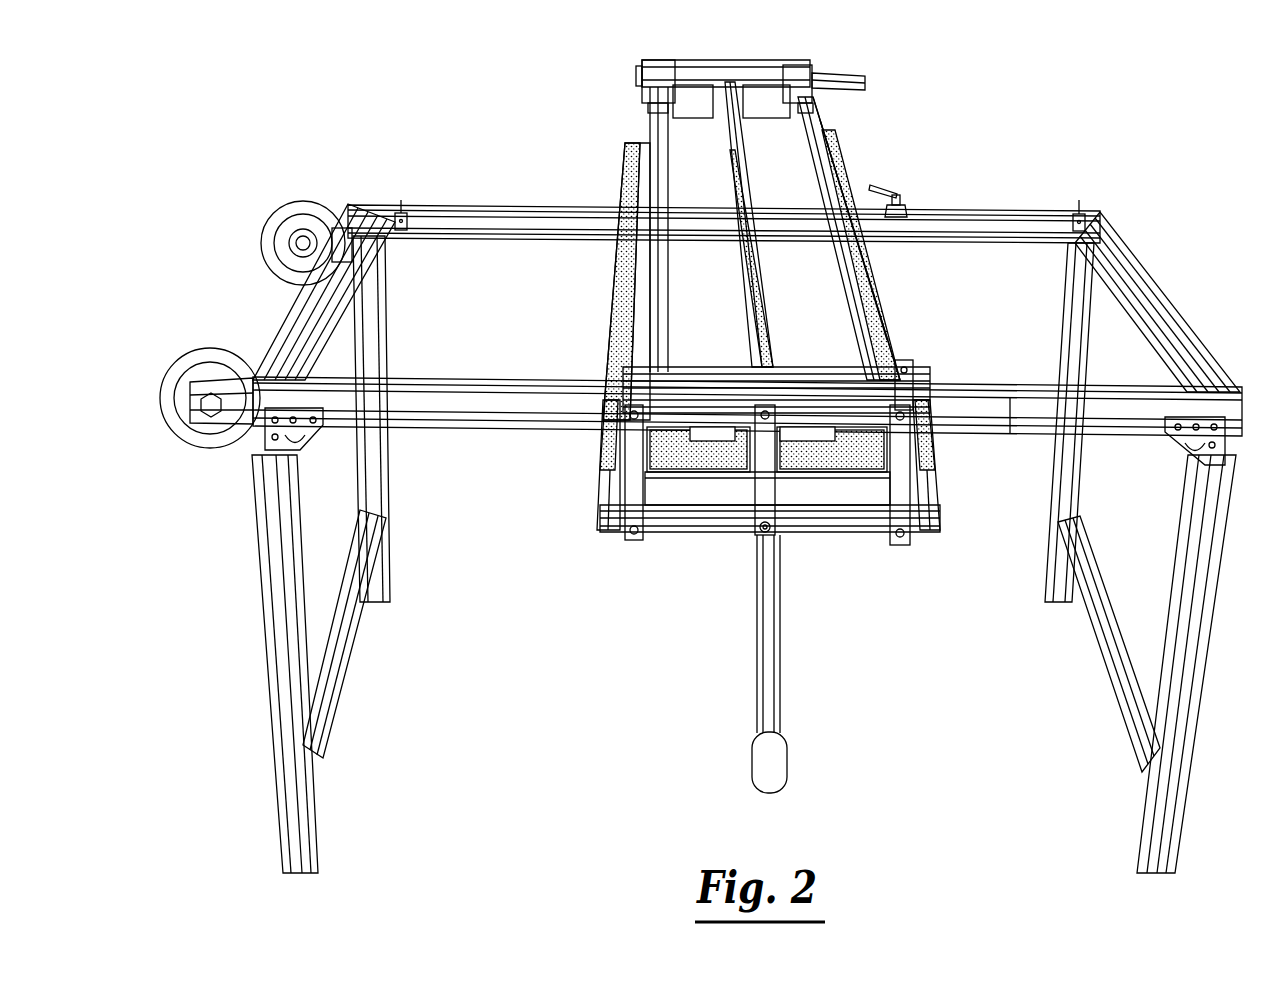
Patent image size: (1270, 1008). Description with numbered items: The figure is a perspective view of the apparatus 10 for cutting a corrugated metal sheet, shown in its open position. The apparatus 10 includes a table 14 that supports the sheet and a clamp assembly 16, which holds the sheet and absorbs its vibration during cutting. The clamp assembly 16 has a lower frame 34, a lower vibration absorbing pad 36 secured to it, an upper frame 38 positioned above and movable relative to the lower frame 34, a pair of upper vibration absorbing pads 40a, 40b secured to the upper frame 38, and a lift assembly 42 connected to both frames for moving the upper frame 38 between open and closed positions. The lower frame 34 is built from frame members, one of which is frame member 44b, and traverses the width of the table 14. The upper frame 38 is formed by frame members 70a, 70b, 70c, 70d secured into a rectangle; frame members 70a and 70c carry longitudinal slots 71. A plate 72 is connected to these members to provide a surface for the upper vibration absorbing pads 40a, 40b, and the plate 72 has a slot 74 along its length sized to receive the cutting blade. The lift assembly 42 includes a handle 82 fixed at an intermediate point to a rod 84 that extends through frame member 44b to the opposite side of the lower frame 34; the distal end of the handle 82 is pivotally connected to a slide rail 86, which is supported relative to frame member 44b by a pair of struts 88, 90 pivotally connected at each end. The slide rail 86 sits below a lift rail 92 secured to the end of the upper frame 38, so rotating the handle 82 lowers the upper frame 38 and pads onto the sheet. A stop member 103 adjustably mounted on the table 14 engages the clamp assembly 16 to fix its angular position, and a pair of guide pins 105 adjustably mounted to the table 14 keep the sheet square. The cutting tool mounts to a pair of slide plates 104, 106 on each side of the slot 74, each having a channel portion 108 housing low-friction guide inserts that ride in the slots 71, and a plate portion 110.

The apparatus 10 is at (990, 100).
The table 14 is at (523, 207).
The clamp assembly 16 is at (686, 535).
The lower frame 34 is at (592, 500).
The lower vibration absorbing pad 36 is at (930, 460).
The upper frame 38 is at (862, 315).
The upper vibration absorbing pad 40a is at (728, 445).
The upper vibration absorbing pad 40b is at (805, 445).
The lift assembly 42 is at (783, 624).
The frame member 44b is at (815, 518).
The frame member 70a is at (858, 272).
The frame member 70b is at (685, 372).
The frame member 70c is at (658, 268).
The frame member 70d is at (712, 75).
The longitudinal slot 71 is at (660, 178).
The plate 72 is at (800, 168).
The slot 74 is at (745, 242).
The handle 82 is at (760, 680).
The rod 84 is at (768, 530).
The slide rail 86 is at (803, 420).
The strut 88 is at (628, 542).
The strut 90 is at (905, 545).
The lift rail 92 is at (913, 395).
The stop member 103 is at (903, 193).
The slide plate 104 is at (665, 78).
The guide pin 105 is at (402, 210).
The slide plate 106 is at (793, 80).
The channel portion 108 is at (675, 110).
The plate portion 110 is at (697, 108).